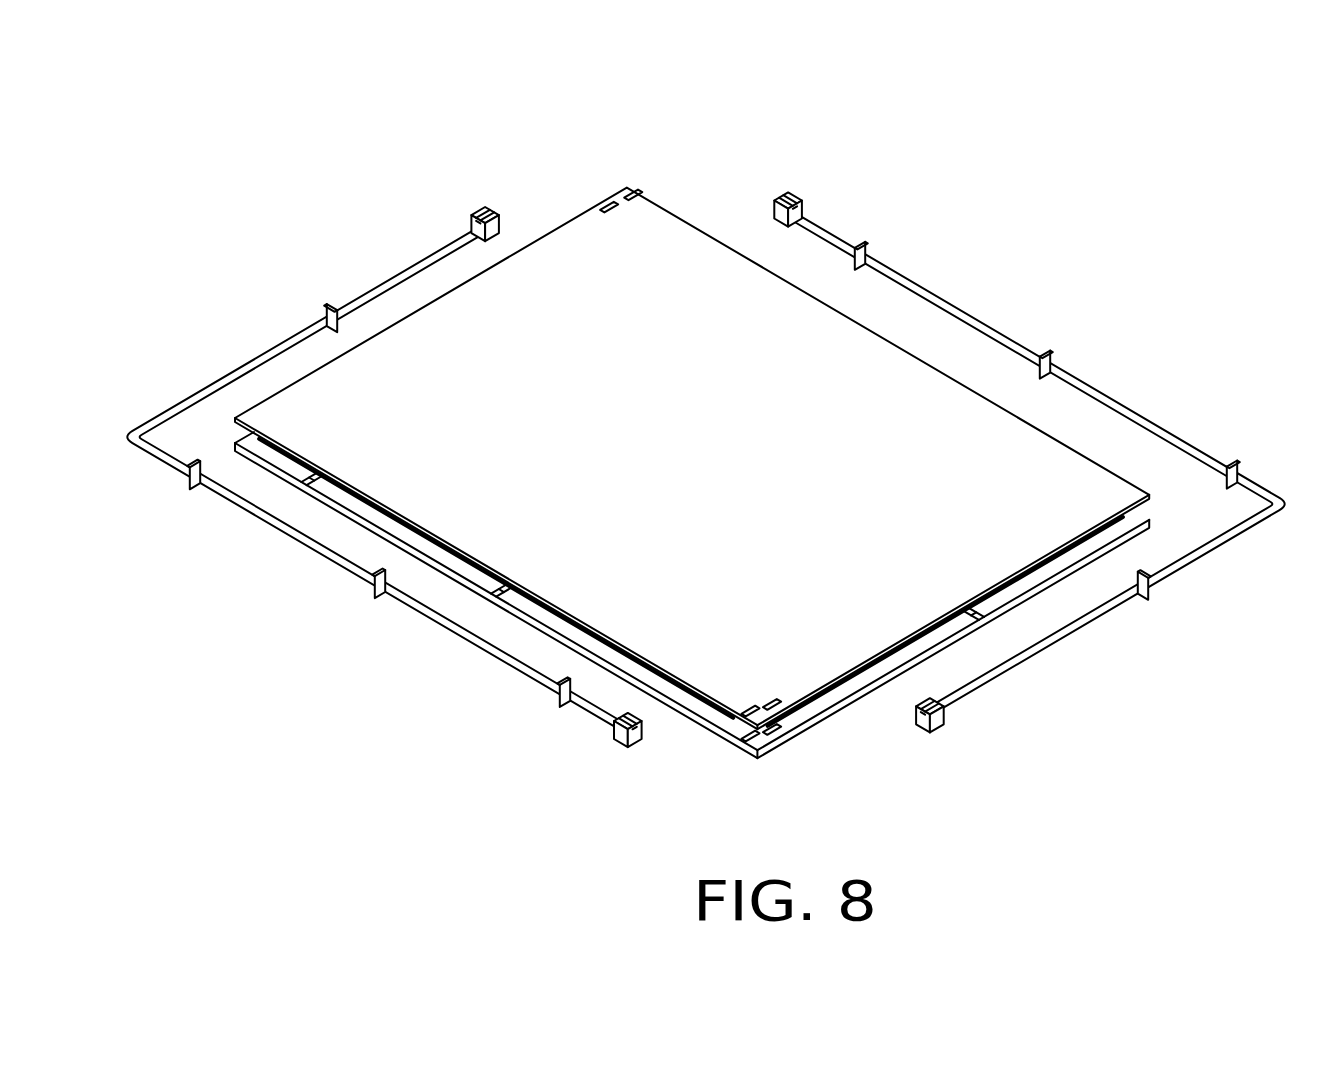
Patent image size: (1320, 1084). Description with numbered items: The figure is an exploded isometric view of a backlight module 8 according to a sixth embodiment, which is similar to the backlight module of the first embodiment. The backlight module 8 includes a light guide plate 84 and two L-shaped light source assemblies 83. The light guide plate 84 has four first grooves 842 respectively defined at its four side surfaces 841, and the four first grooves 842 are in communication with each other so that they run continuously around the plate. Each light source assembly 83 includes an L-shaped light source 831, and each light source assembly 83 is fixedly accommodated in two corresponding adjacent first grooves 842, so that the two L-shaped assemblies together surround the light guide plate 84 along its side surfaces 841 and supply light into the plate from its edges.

The backlight module 8 is at (598, 93).
The light source assembly 83 is at (705, 469).
The L-shaped light source 831 is at (333, 560).
The light guide plate 84 is at (577, 272).
The side surface 841 is at (715, 723).
The first groove 842 is at (800, 713).